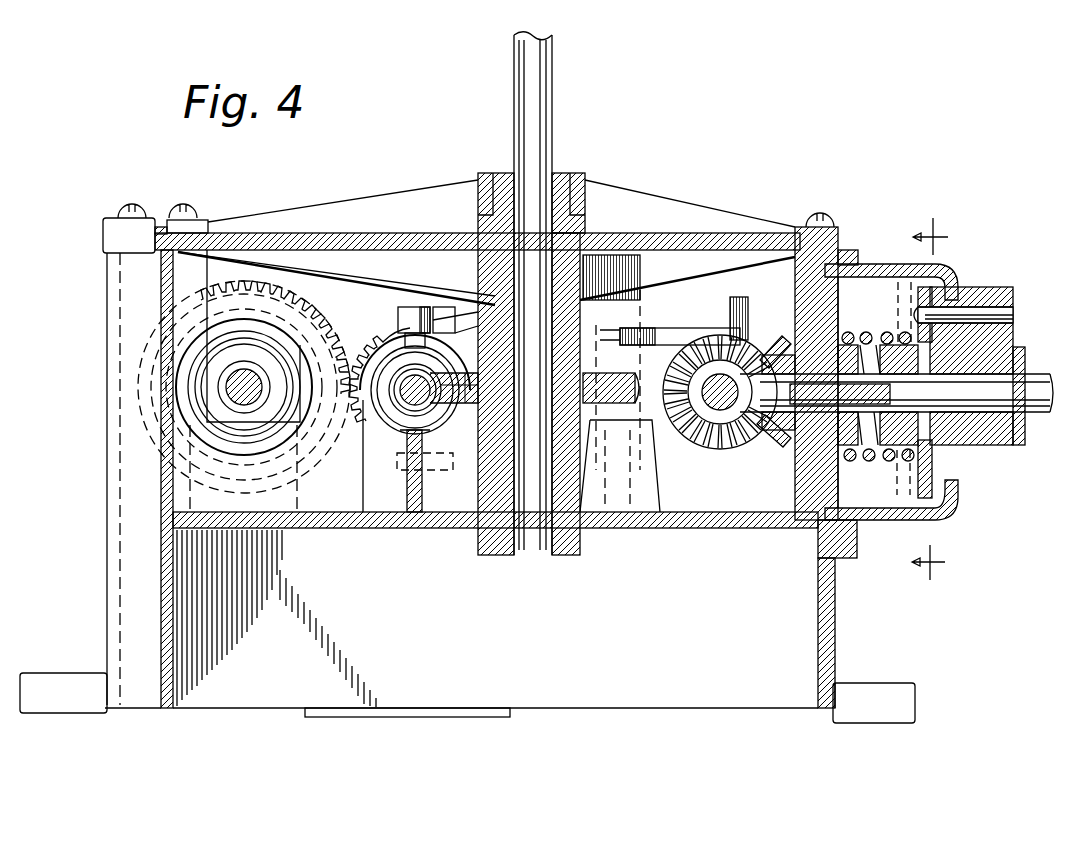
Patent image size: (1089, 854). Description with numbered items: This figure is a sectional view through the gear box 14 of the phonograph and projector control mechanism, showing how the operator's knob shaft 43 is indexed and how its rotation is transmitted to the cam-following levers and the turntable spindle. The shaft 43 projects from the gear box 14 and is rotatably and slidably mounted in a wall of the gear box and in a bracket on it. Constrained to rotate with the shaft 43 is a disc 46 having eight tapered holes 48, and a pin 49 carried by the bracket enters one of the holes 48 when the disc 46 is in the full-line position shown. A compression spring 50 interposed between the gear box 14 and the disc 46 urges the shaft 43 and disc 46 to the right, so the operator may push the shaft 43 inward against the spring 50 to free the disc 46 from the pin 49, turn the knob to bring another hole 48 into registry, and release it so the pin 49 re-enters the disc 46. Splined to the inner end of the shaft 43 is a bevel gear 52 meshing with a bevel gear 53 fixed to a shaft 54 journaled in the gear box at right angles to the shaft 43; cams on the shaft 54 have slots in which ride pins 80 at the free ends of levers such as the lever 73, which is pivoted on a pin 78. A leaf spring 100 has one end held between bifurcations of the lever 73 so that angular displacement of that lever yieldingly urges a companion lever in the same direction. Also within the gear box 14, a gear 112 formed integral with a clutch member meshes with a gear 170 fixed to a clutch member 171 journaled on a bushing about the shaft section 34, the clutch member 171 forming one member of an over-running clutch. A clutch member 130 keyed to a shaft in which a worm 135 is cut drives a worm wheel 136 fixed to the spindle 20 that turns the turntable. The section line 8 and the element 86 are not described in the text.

The gear box 14 is at (836, 630).
The shaft or spindle 20 is at (545, 105).
The gear 170 is at (303, 300).
The clutch member 171 is at (243, 340).
The shaft section 34 is at (255, 368).
The gear 112 is at (380, 332).
The clutch member 130 is at (396, 408).
The worm 135 is at (408, 412).
The worm wheel 136 is at (446, 428).
The bearing cap 86 is at (416, 310).
The leaf spring 100 is at (466, 315).
The pin 78 is at (632, 250).
The lever 73 is at (668, 300).
The pin 80 is at (730, 305).
The bevel gear 53 is at (727, 448).
The shaft 54 is at (720, 410).
The bevel gear 52 is at (778, 344).
The shaft 43 is at (1042, 412).
The disc 46 is at (928, 488).
The pin 49 is at (975, 312).
The tapered holes 48 is at (923, 298).
The compression spring 50 is at (868, 336).
The section line 8 is at (930, 396).